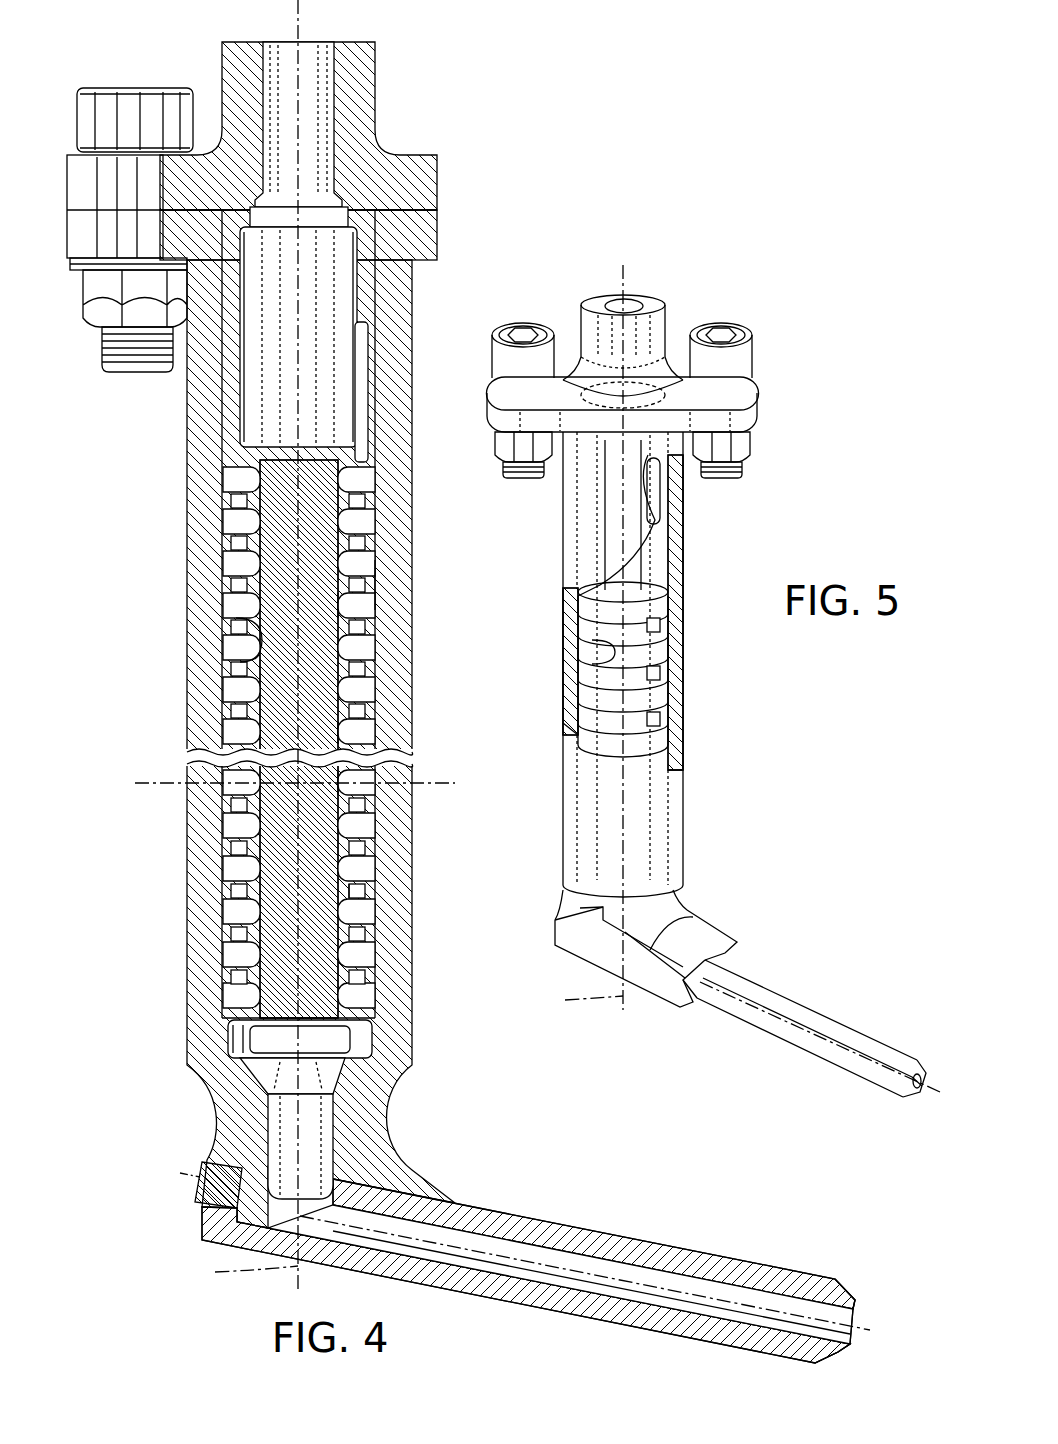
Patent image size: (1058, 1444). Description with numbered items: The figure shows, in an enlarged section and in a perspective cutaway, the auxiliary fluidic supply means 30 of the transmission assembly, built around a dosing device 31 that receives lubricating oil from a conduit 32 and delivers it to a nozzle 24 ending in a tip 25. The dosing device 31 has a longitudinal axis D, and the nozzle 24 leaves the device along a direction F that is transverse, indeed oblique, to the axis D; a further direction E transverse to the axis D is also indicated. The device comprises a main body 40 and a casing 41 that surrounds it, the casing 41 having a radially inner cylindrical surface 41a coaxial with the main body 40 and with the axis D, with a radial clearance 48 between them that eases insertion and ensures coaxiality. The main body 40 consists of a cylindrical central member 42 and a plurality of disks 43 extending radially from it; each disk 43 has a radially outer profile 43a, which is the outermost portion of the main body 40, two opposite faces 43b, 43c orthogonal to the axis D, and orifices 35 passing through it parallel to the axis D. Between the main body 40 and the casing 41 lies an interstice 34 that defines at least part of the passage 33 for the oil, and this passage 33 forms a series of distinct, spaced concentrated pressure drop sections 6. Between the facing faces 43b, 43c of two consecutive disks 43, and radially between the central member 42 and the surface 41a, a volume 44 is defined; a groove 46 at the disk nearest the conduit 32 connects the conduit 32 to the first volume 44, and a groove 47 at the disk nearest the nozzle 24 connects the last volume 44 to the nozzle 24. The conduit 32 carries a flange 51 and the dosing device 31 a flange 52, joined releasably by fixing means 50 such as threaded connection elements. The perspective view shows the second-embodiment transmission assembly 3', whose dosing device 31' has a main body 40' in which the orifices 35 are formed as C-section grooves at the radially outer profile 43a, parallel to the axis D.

In FIG. 5, the transmission assembly 3' is at (713, 673).
In FIG. 4, the concentrated pressure drop sections 6 is at (298, 739).
In FIG. 5, the concentrated pressure drop sections 6 is at (653, 672).
In FIG. 4, the nozzle 24 is at (487, 1278).
In FIG. 5, the nozzle 24 is at (775, 1032).
In FIG. 4, the pipe tip 25 is at (862, 1310).
In FIG. 5, the pipe tip 25 is at (912, 1100).
In FIG. 4, the auxiliary fluidic supply means 30 is at (437, 105).
In FIG. 5, the auxiliary fluidic supply means 30 is at (716, 276).
In FIG. 4, the dosing device 31 is at (521, 681).
In FIG. 5, the dosing device 31' is at (721, 804).
In FIG. 4, the conduit 32 is at (315, 110).
In FIG. 5, the conduit 32 is at (624, 306).
In FIG. 4, the passage 33 is at (240, 471).
In FIG. 5, the passage 33 is at (662, 566).
In FIG. 4, the interstice 34 is at (298, 337).
In FIG. 5, the interstice 34 is at (623, 587).
In FIG. 4, the orifices 35 is at (240, 510).
In FIG. 5, the orifices 35 is at (654, 640).
In FIG. 4, the main body 40 is at (220, 739).
In FIG. 5, the main body 40' is at (581, 657).
In FIG. 4, the casing 41 is at (200, 940).
In FIG. 5, the casing 41 is at (672, 722).
In FIG. 4, the radially inner cylindrical surface 41a is at (240, 627).
In FIG. 5, the radially inner cylindrical surface 41a is at (590, 627).
In FIG. 4, the central member 42 is at (310, 956).
In FIG. 4, the disks 43 is at (360, 504).
In FIG. 5, the disks 43 is at (576, 606).
In FIG. 4, the radially outer profile 43a is at (382, 583).
In FIG. 4, the face 43b is at (357, 490).
In FIG. 4, the face 43c is at (362, 602).
In FIG. 4, the volume 44 is at (347, 736).
In FIG. 5, the volume 44 is at (662, 602).
In FIG. 4, the groove 46 is at (367, 362).
In FIG. 5, the groove 46 is at (652, 512).
In FIG. 4, the groove 47 is at (248, 1040).
In FIG. 4, the radial clearance 48 is at (380, 888).
In FIG. 4, the fixing means 50 is at (88, 345).
In FIG. 4, the flange 51 is at (412, 182).
In FIG. 5, the flange 51 is at (755, 372).
In FIG. 4, the flange 52 is at (412, 230).
In FIG. 5, the flange 52 is at (752, 406).
In FIG. 4, the longitudinal axis D is at (247, 1273).
In FIG. 5, the longitudinal axis D is at (584, 1001).
In FIG. 4, the direction E is at (157, 780).
In FIG. 4, the direction F is at (640, 1270).
In FIG. 5, the direction F is at (800, 1030).